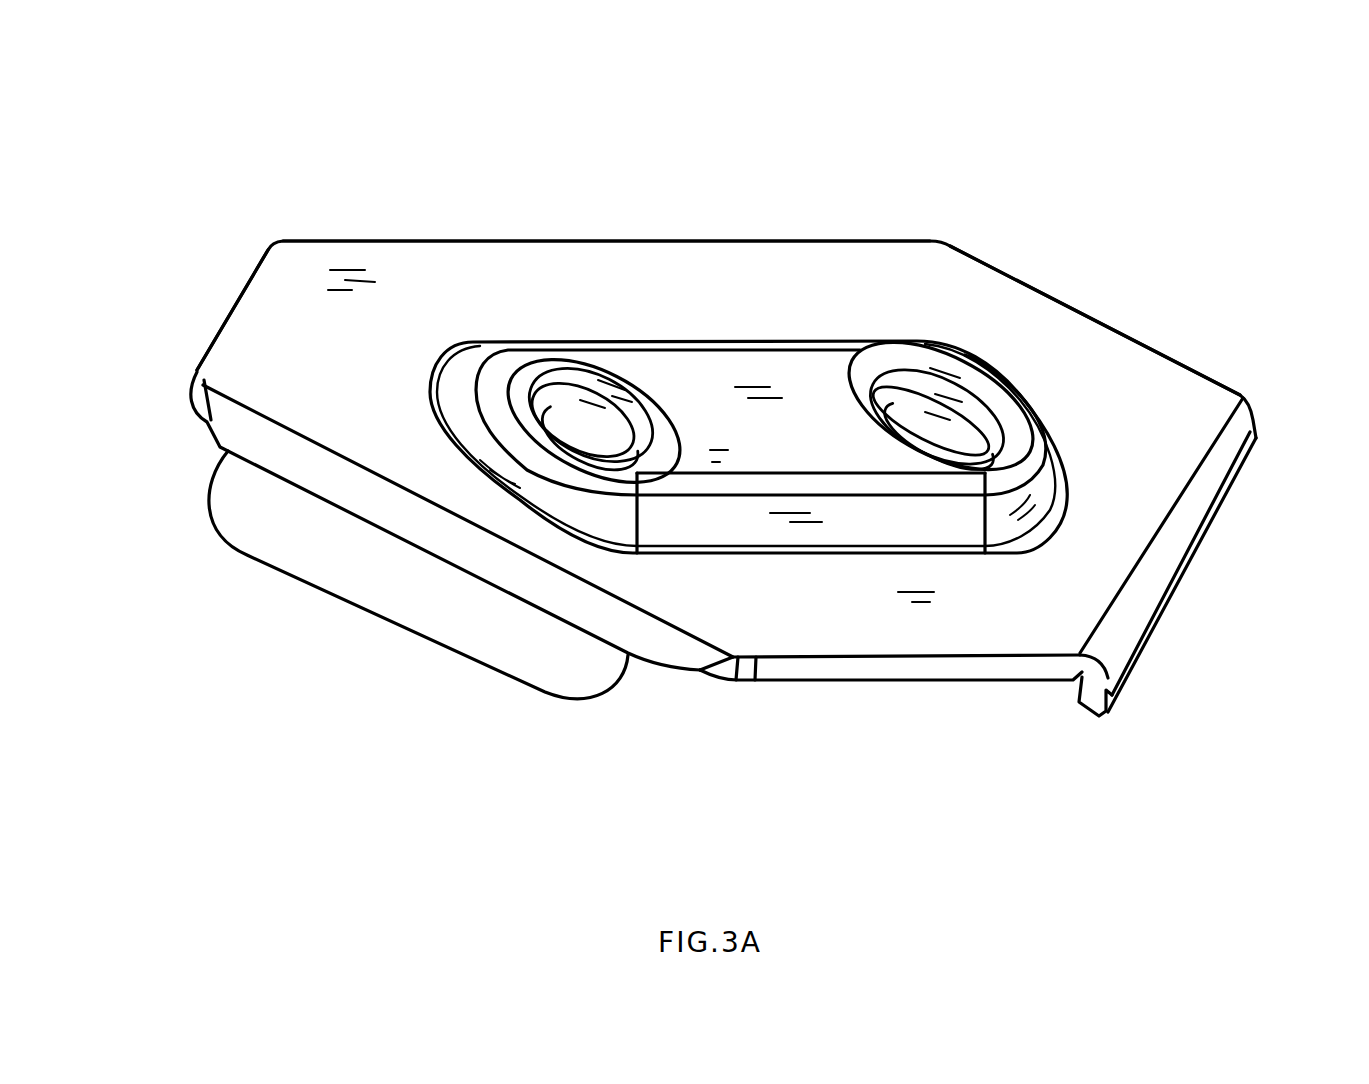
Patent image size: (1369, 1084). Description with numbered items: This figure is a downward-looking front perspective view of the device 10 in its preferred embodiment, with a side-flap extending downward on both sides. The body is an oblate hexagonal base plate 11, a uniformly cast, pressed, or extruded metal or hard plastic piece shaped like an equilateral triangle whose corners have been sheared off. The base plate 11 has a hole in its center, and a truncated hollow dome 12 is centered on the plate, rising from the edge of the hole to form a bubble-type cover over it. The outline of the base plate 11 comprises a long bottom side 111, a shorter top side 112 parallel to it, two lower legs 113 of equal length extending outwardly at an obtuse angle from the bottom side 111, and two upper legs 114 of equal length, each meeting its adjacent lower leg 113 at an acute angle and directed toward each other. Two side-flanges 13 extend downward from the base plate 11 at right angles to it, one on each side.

The clip / holder device 10 is at (920, 230).
The base plate 11 is at (750, 278).
The bottom side 111 is at (563, 238).
The top side 112 is at (913, 664).
The lower legs 113 is at (246, 289).
The upper legs 114 is at (280, 455).
The truncated hollow dome 12 is at (1045, 420).
The side-flanges 13 is at (400, 612).